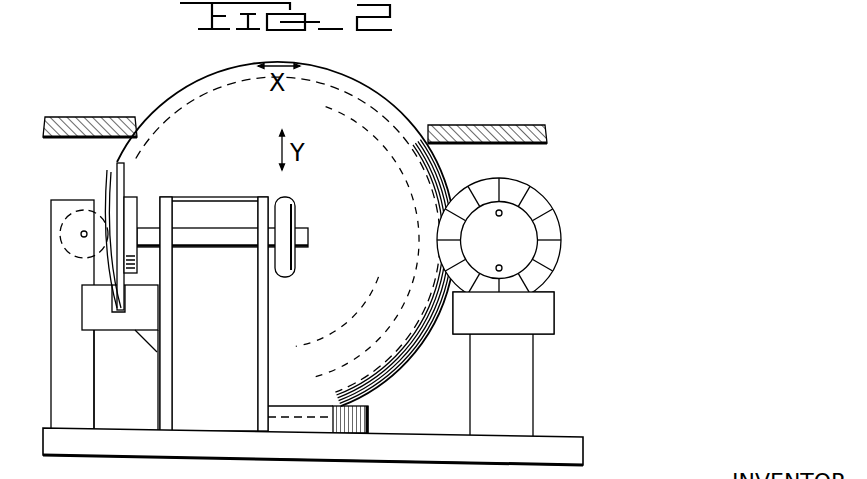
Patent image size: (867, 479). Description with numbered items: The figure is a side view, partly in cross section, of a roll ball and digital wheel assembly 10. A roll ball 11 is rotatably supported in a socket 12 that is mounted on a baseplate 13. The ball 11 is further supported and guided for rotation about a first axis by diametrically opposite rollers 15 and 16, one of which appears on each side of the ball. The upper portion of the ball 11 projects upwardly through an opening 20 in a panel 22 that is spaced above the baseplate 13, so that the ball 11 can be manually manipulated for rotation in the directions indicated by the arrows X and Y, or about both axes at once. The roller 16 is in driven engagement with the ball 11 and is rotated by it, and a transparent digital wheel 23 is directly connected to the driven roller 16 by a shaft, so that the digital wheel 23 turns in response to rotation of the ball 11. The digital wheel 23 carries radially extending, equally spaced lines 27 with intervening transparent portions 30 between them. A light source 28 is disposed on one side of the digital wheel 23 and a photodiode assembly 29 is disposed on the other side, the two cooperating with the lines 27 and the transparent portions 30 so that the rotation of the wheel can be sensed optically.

The roll ball and digital wheel assembly 10 is at (677, 199).
The roll ball 11 is at (381, 213).
The socket 12 is at (371, 418).
The baseplate 13 is at (587, 445).
The roller 15 is at (109, 192).
The driven roller 16 is at (297, 262).
The opening 20 is at (139, 134).
The panel 22 is at (492, 125).
The digital wheel 23 is at (563, 240).
The lines 27 is at (508, 184).
The light source 28 is at (145, 316).
The photodiode assembly 29 is at (539, 323).
The transparent portions 30 is at (528, 193).